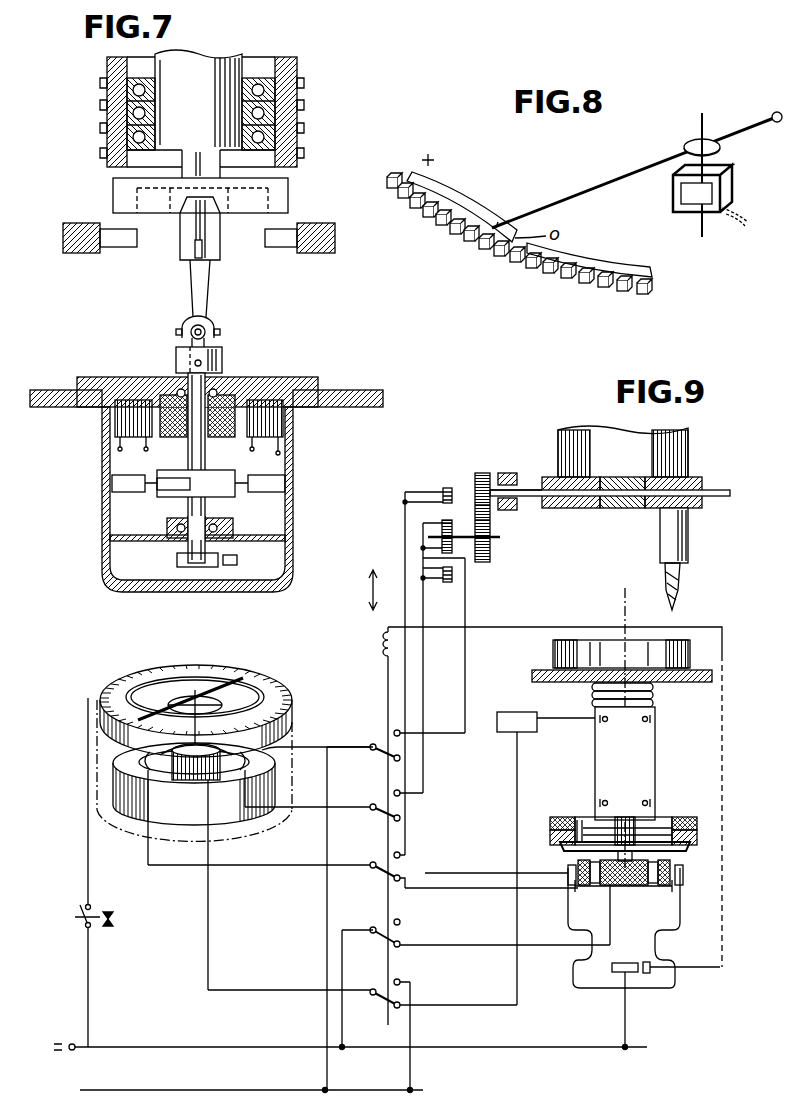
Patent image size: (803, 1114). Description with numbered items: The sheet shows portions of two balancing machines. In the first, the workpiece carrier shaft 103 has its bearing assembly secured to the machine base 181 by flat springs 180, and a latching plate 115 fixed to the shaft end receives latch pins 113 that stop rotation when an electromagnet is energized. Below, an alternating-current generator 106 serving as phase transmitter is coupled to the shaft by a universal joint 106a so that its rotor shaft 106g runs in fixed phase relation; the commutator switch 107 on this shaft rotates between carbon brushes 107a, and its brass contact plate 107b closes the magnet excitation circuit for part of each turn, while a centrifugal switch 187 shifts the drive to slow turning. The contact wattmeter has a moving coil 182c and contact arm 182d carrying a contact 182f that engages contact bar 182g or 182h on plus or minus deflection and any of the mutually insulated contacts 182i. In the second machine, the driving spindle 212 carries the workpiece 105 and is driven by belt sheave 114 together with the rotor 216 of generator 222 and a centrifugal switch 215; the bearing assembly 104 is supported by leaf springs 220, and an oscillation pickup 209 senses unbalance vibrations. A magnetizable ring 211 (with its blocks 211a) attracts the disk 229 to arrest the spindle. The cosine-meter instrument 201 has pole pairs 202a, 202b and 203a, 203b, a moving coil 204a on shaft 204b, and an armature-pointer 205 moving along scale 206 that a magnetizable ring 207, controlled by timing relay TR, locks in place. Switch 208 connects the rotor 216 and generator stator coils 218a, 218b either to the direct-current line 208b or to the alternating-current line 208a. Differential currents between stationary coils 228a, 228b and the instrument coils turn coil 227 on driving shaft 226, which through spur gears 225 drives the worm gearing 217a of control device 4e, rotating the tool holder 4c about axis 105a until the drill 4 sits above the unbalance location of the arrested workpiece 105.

In FIG. 7, the flat springs 180 is at (107, 68).
In FIG. 7, the latching plate 115 is at (113, 186).
In FIG. 7, the latch pins 113 is at (290, 232).
In FIG. 7, the carrier shaft 103 is at (220, 229).
In FIG. 7, the universal joint 106a is at (210, 325).
In FIG. 7, the machine base 181 is at (58, 390).
In FIG. 7, the alternating-current generator 106 is at (115, 425).
In FIG. 7, the rotor shaft 106g is at (205, 450).
In FIG. 7, the commutator switch 107 is at (215, 497).
In FIG. 7, the carbon brushes 107a is at (130, 475).
In FIG. 7, the contact plate 107b is at (172, 490).
In FIG. 7, the centrifugal switch 187 is at (177, 560).
In FIG. 8, the contact bar 182g is at (448, 195).
In FIG. 8, the contact arm 182d is at (586, 195).
In FIG. 8, the contact 182f is at (505, 227).
In FIG. 8, the contact bar 182h is at (585, 258).
In FIG. 8, the mutually insulated contacts 182i is at (533, 272).
In FIG. 8, the moving coil 182c is at (722, 184).
In FIG. 9, the spur gears 225 is at (483, 473).
In FIG. 9, the coil 227 is at (480, 490).
In FIG. 9, the control device 4e is at (527, 456).
In FIG. 9, the stationary coil 228a is at (443, 488).
In FIG. 9, the driving shaft 226 is at (500, 537).
In FIG. 9, the stationary coil 228b is at (455, 580).
In FIG. 9, the worm gear transmission 217a is at (630, 505).
In FIG. 9, the tool holder 4c is at (688, 538).
In FIG. 9, the tool 4 is at (680, 574).
In FIG. 9, the axis of rotation 105a is at (624, 603).
In FIG. 9, the workpiece 105 is at (677, 640).
In FIG. 9, the belt sheave 114 is at (652, 683).
In FIG. 9, the bearing assembly 104 is at (656, 742).
In FIG. 9, the leaf springs 220 is at (650, 722).
In FIG. 9, the oscillation pickup 209 is at (532, 712).
In FIG. 9, the bearing blocks 211a is at (697, 820).
In FIG. 9, the magnetizable ring 211 is at (697, 838).
In FIG. 9, the driving spindle 212 is at (635, 824).
In FIG. 9, the disk 229 is at (690, 850).
In FIG. 9, the rotor 216 is at (680, 868).
In FIG. 9, the pole pair coil 218a is at (568, 885).
In FIG. 9, the pole pair coil 218b is at (683, 885).
In FIG. 9, the generator 222 is at (612, 972).
In FIG. 9, the centrifugal switch 215 is at (640, 972).
In FIG. 9, the moving coil instrument 201 is at (100, 716).
In FIG. 9, the scale 206 is at (183, 678).
In FIG. 9, the magnetizable ring 207 is at (198, 690).
In FIG. 9, the magnetic armature 205 is at (230, 682).
In FIG. 9, the shaft 204b is at (215, 720).
In FIG. 9, the pole pair coil 202a is at (118, 760).
In FIG. 9, the pole pair coil 203b is at (275, 750).
In FIG. 9, the moving coil 204a is at (262, 762).
In FIG. 9, the pole pair coil 202b is at (300, 769).
In FIG. 9, the pole pair coil 203a is at (178, 782).
In FIG. 9, the alternating-current supply line 208a is at (383, 645).
In FIG. 9, the switch 208 is at (388, 690).
In FIG. 9, the direct-current supply line 208b is at (131, 1047).
In FIG. 9, the timing relay TR is at (108, 872).